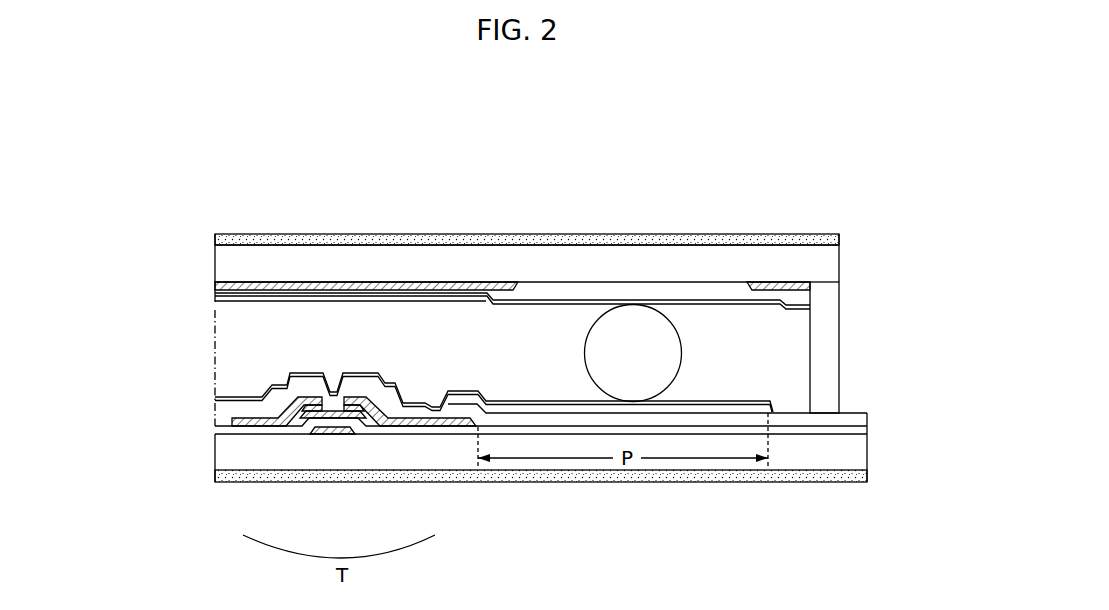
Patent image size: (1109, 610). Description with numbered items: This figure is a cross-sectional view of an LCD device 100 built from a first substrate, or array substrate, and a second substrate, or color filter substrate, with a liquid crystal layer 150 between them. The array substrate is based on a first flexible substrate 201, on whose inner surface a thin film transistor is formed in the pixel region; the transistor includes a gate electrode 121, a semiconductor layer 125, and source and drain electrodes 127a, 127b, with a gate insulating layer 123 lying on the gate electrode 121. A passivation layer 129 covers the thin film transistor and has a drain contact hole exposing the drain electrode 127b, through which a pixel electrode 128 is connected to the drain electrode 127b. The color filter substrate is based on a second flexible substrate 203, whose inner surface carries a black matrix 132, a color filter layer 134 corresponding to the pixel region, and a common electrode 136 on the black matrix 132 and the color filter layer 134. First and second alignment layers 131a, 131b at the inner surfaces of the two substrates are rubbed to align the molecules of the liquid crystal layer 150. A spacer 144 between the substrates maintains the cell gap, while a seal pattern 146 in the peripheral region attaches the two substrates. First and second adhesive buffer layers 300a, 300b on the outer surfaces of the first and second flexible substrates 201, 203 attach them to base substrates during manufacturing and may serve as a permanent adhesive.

The LCD device 100 is at (854, 123).
The second adhesive buffer layer 300b is at (720, 238).
The second flexible substrate 203 is at (222, 266).
The color filter layer 134 is at (583, 287).
The black matrix 132 is at (253, 282).
The common electrode 136 is at (395, 282).
The second alignment layer 131b is at (672, 297).
The seal pattern 146 is at (839, 345).
The liquid crystal layer 150 is at (218, 334).
The spacer 144 is at (682, 352).
The pixel electrode 128 is at (540, 404).
The first alignment layer 131a is at (508, 400).
The passivation layer 129 is at (335, 387).
The gate electrode 121 is at (332, 434).
The gate insulating layer 123 is at (376, 426).
The semiconductor layer 125 is at (302, 418).
The source electrode 127a is at (242, 434).
The drain electrode 127b is at (429, 426).
The first flexible substrate 201 is at (215, 458).
The first adhesive buffer layer 300a is at (690, 482).